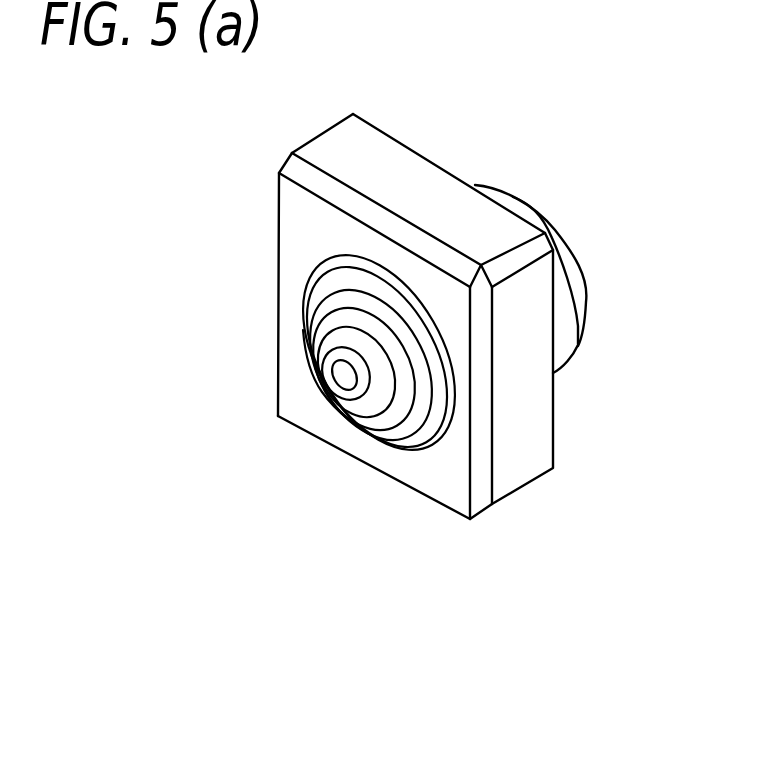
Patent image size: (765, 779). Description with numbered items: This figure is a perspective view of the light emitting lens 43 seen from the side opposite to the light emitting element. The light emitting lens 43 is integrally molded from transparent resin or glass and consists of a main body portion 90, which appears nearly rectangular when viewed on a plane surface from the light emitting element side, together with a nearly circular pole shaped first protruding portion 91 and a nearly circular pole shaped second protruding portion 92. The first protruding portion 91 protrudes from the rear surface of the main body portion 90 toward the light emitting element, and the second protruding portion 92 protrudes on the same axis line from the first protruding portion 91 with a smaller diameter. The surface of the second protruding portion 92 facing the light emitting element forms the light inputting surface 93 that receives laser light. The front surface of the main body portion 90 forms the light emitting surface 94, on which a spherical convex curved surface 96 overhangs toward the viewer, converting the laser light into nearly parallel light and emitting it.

The light emitting lens 43 is at (427, 354).
The main body portion 90 is at (553, 437).
The first protruding portion 91 is at (579, 345).
The second protruding portion 92 is at (563, 248).
The light inputting surface 93 is at (585, 287).
The light emitting surface 94 is at (288, 228).
The convex curved surface 96 is at (308, 347).